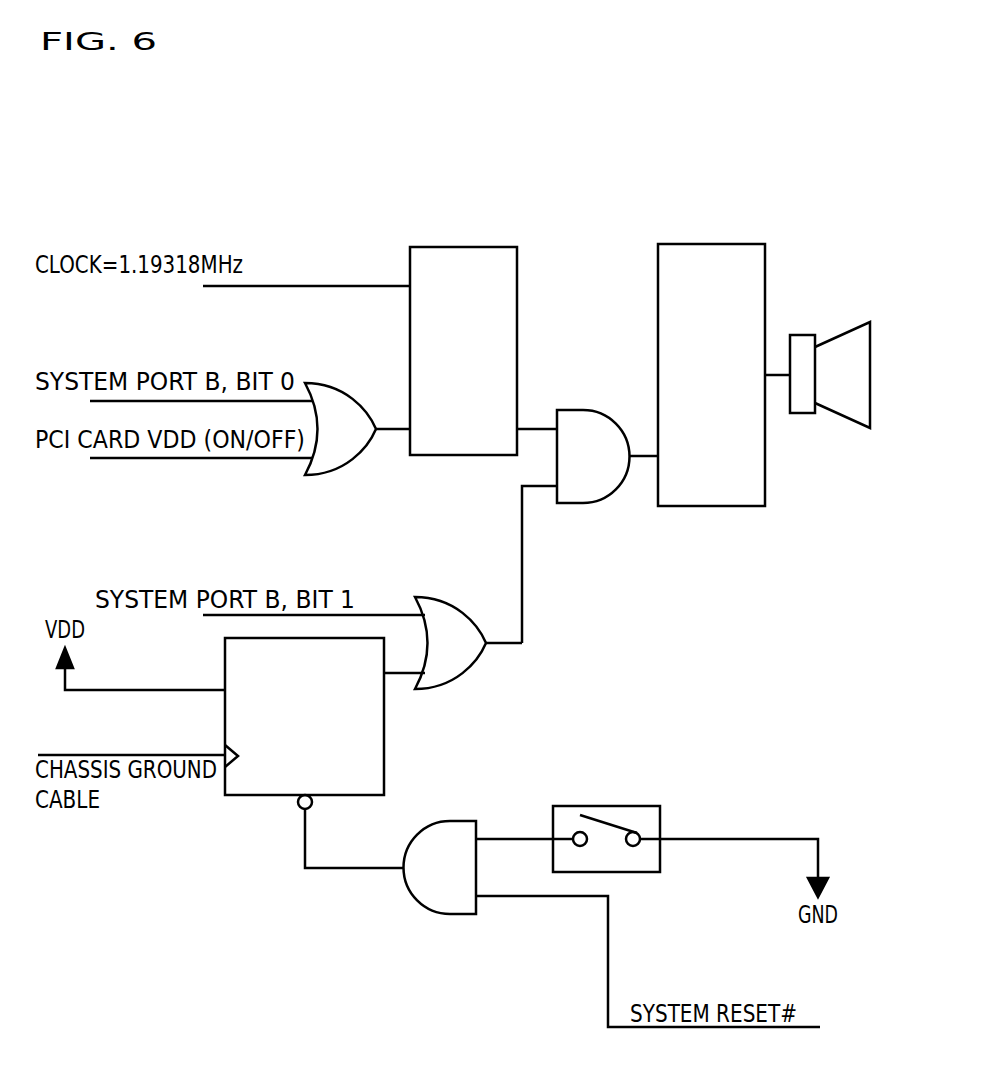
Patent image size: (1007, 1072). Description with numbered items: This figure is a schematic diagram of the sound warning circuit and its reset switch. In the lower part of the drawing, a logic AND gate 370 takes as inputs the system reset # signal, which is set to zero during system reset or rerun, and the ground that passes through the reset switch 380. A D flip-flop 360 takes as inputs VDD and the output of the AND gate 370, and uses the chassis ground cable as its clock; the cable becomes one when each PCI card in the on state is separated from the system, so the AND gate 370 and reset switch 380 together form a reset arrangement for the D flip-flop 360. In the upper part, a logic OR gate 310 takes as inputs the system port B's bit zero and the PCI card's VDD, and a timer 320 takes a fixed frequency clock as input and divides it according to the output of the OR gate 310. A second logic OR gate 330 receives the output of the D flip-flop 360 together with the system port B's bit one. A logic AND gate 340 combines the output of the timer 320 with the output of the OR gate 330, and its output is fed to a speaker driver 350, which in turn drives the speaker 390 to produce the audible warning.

The logic OR gate 310 is at (338, 383).
The timer 320 is at (460, 247).
The logic OR gate 330 is at (450, 597).
The logic AND gate 340 is at (572, 410).
The speaker driver 350 is at (712, 244).
The D flip-flop 360 is at (384, 762).
The logic AND gate 370 is at (453, 914).
The reset switch 380 is at (660, 858).
The speaker 390 is at (803, 335).